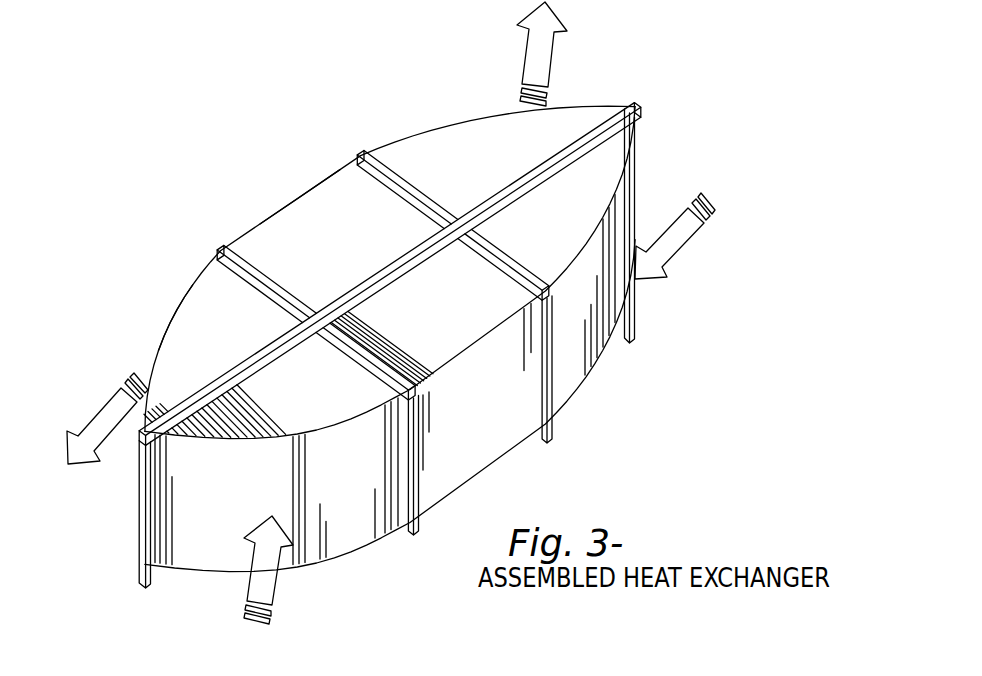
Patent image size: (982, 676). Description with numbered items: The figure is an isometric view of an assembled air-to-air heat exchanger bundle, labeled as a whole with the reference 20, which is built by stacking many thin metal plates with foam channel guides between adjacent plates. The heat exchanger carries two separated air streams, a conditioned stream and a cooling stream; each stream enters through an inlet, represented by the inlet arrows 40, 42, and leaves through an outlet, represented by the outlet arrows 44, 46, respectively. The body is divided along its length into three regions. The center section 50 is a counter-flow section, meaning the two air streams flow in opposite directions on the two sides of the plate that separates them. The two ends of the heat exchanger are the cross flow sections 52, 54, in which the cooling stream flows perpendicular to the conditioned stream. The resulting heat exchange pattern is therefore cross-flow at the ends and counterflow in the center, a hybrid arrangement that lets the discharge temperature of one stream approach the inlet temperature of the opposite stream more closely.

The assembled heat exchanger 20 is at (624, 475).
The inlet arrow 40 is at (684, 249).
The inlet arrow 42 is at (275, 592).
The outlet arrow 44 is at (103, 402).
The outlet arrow 46 is at (555, 57).
The center section 50 is at (292, 211).
The cross flow section 52 is at (413, 134).
The cross flow section 54 is at (180, 302).